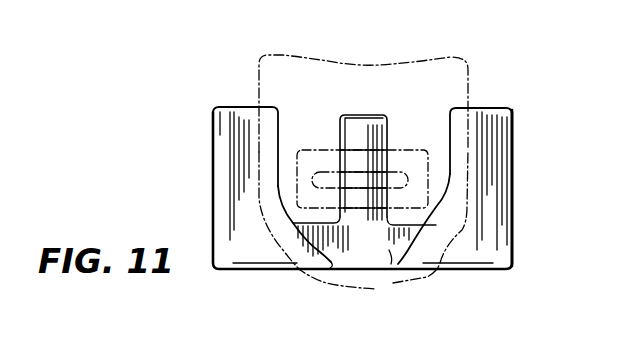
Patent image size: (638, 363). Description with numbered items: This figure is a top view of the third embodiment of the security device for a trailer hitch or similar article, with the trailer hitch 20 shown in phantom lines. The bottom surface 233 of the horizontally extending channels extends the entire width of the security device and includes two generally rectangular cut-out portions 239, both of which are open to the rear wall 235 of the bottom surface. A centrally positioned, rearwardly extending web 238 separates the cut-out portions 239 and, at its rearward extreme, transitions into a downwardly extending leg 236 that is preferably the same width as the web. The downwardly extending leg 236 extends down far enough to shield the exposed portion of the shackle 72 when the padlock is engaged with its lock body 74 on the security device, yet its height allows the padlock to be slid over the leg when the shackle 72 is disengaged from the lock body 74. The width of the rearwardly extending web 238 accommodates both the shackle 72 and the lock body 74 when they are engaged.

The phantom outline of mounted component 20 is at (232, 65).
The shackle 72 is at (395, 172).
The lock body 74 is at (313, 152).
The bottom surface 233 is at (388, 270).
The rear wall 235 is at (232, 105).
The downwardly extending leg 236 is at (388, 120).
The rearwardly extending web 238 is at (354, 165).
The cut-out portions 239 is at (290, 192).